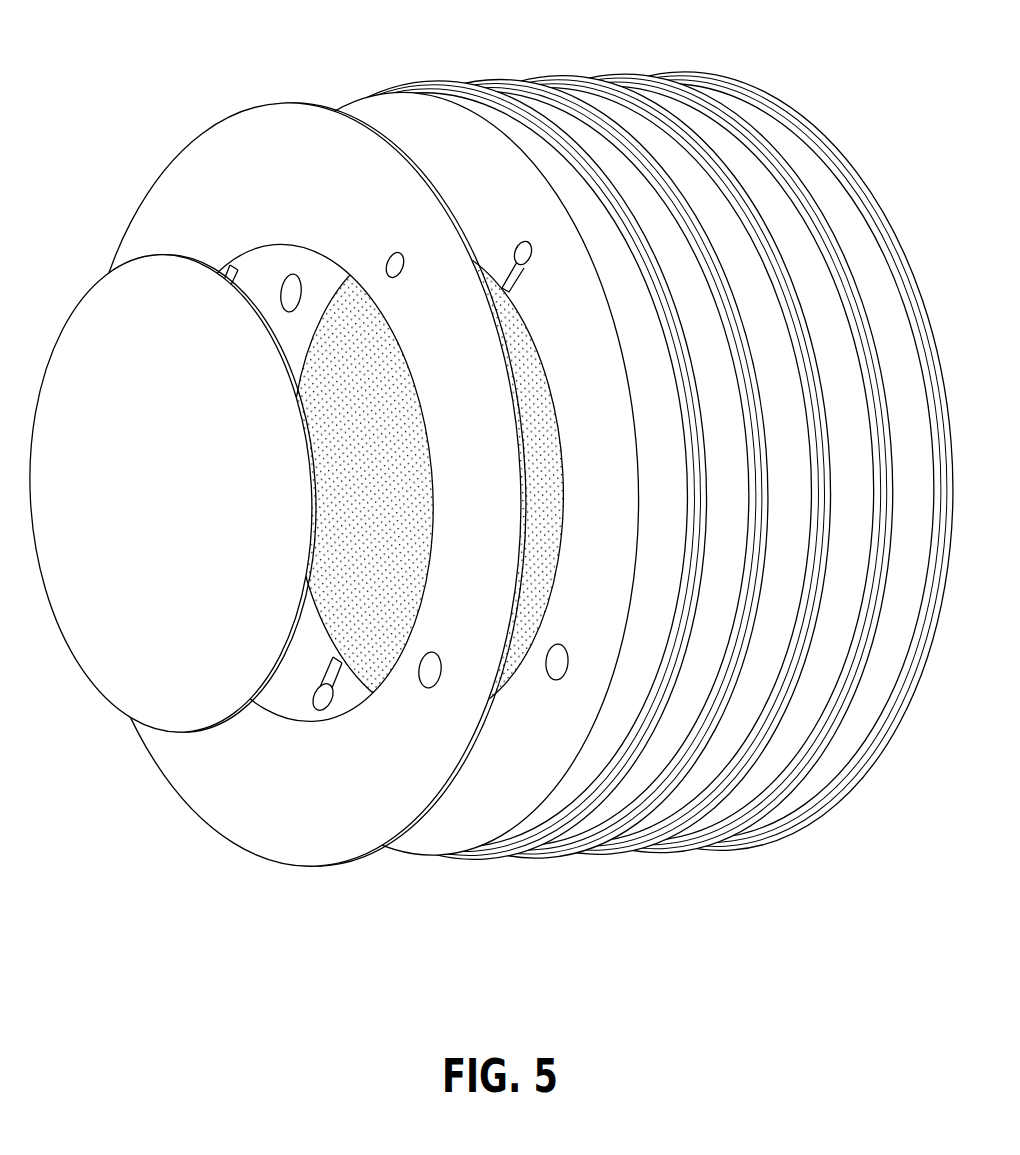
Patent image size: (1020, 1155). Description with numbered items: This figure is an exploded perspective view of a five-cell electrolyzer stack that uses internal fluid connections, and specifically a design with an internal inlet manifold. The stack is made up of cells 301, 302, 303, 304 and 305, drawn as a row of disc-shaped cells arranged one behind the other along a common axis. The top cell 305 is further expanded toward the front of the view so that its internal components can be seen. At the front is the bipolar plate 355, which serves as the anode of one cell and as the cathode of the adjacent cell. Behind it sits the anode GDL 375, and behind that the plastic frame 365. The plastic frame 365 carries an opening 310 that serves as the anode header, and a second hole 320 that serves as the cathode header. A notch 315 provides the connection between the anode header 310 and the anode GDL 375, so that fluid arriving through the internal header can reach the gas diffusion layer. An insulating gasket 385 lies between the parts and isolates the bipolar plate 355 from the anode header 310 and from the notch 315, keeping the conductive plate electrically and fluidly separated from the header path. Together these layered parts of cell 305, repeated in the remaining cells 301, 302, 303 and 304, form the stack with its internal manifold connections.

The cell 301 is at (858, 733).
The cell 302 is at (807, 740).
The cell 303 is at (740, 737).
The cell 304 is at (680, 737).
The cell 305 is at (613, 737).
The opening 310 is at (392, 262).
The notch 315 is at (510, 268).
The second hole 320 is at (283, 293).
The bipolar plate 355 is at (178, 667).
The plastic frame 365 is at (533, 740).
The anode GDL 375 is at (350, 363).
The insulating gasket 385 is at (395, 737).